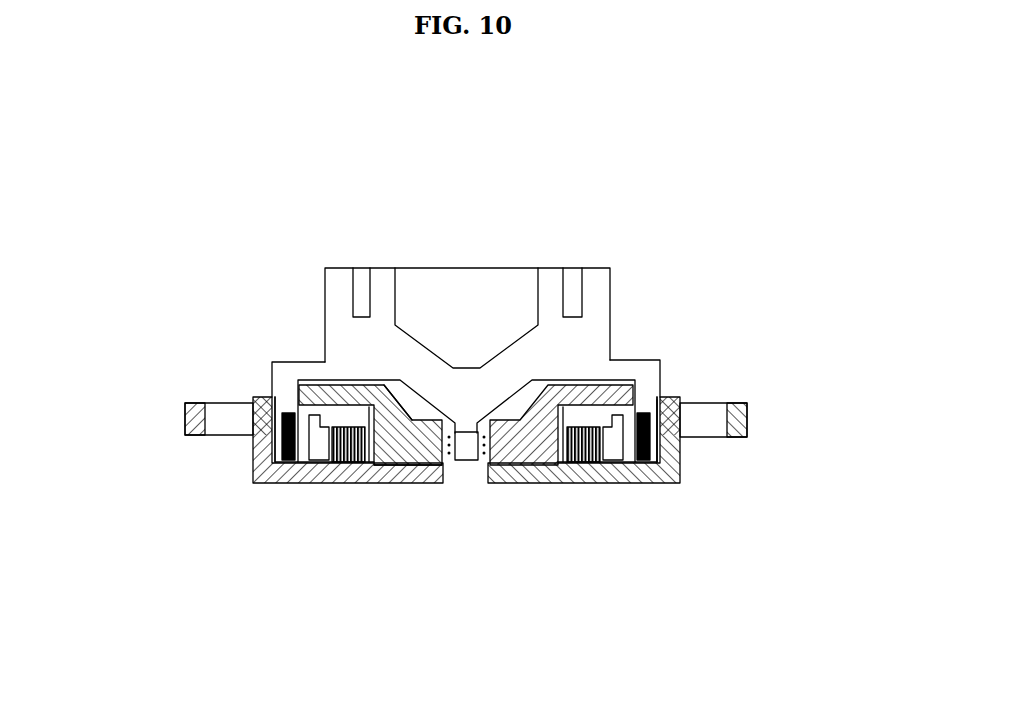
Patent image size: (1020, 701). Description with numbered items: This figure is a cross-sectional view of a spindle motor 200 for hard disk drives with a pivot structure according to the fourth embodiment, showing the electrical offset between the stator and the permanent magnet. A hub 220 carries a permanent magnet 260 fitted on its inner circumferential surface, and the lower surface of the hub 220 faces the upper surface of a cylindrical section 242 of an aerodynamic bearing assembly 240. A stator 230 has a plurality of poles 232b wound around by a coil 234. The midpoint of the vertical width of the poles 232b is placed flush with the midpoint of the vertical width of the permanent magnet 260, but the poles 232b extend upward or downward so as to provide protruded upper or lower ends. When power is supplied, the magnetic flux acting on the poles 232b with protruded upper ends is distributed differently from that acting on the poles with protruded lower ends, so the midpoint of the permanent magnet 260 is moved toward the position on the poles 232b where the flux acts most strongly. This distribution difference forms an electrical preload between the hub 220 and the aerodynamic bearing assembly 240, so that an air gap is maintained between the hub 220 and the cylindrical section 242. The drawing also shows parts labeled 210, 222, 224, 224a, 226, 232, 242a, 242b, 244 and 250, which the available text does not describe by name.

The spindle motor 200 is at (745, 338).
The base plate 210 is at (696, 473).
The hub 220 is at (323, 350).
The mounting flange 222 is at (265, 395).
The valve body 224 is at (327, 268).
The inner passage 224a is at (505, 300).
The core 226 is at (433, 483).
The stator 230 is at (337, 483).
The yoke 232 is at (398, 400).
The poles 232b is at (680, 448).
The coil 234 is at (360, 483).
The aerodynamic bearing assembly 240 is at (488, 483).
The cylindrical section 242 is at (634, 382).
The yoke plate 242a is at (573, 385).
The yoke plate 242b is at (655, 396).
The coil 244 is at (567, 483).
The valve seat 250 is at (440, 403).
The permanent magnet 260 is at (253, 470).